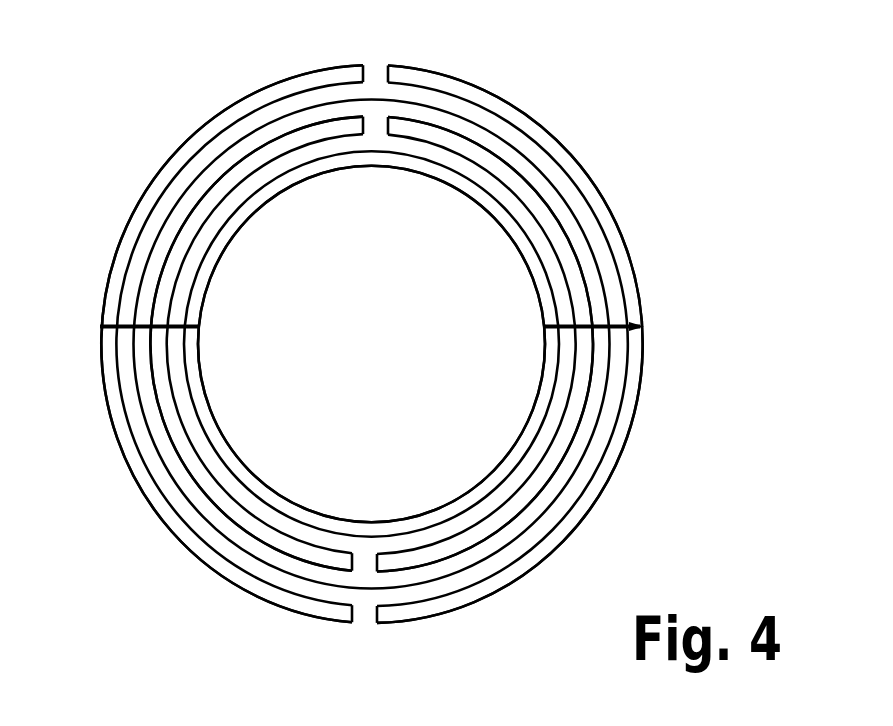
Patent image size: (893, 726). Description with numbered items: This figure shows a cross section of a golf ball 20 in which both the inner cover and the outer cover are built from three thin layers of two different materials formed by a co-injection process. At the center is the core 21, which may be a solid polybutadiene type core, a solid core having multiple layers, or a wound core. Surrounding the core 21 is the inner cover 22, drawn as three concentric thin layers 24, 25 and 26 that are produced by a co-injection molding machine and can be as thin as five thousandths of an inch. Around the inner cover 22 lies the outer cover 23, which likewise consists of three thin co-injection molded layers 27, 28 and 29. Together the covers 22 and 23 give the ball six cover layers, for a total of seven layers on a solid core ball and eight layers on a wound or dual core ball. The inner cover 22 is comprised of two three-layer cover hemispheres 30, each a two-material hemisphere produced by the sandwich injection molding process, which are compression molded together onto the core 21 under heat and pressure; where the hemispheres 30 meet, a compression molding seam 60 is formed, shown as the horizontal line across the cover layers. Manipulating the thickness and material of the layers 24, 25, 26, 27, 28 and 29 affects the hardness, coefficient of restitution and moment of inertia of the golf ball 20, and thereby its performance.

The golf ball 20 is at (648, 154).
The core 21 is at (385, 338).
The inner cover 22 is at (545, 198).
The outer cover 23 is at (630, 258).
The thin layer 24 is at (270, 180).
The thin layer 25 is at (228, 200).
The thin layer 26 is at (197, 218).
The thin layer 27 is at (140, 363).
The thin layer 28 is at (140, 427).
The thin layer 29 is at (158, 500).
The golf ball cover hemisphere 30 is at (498, 95).
The compression molding seam 60 is at (614, 329).